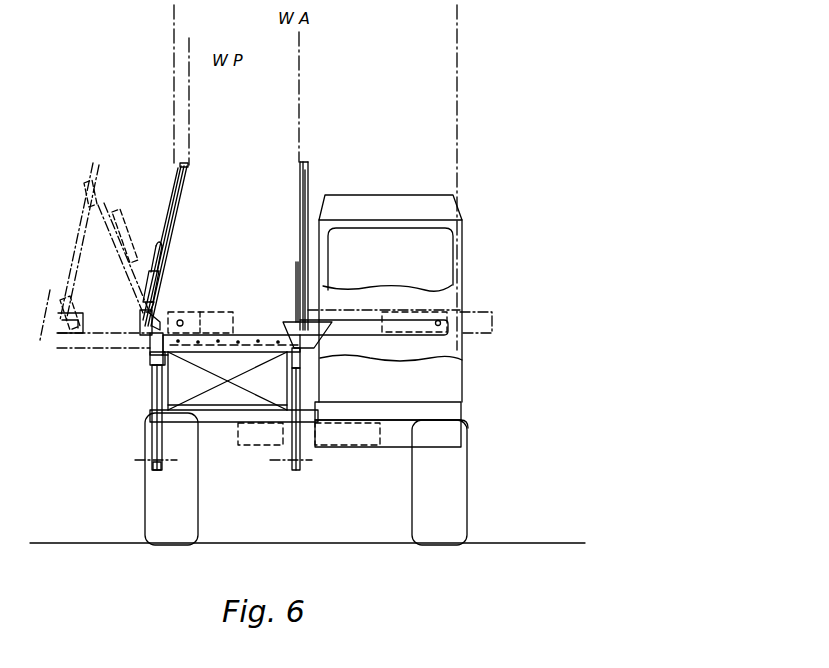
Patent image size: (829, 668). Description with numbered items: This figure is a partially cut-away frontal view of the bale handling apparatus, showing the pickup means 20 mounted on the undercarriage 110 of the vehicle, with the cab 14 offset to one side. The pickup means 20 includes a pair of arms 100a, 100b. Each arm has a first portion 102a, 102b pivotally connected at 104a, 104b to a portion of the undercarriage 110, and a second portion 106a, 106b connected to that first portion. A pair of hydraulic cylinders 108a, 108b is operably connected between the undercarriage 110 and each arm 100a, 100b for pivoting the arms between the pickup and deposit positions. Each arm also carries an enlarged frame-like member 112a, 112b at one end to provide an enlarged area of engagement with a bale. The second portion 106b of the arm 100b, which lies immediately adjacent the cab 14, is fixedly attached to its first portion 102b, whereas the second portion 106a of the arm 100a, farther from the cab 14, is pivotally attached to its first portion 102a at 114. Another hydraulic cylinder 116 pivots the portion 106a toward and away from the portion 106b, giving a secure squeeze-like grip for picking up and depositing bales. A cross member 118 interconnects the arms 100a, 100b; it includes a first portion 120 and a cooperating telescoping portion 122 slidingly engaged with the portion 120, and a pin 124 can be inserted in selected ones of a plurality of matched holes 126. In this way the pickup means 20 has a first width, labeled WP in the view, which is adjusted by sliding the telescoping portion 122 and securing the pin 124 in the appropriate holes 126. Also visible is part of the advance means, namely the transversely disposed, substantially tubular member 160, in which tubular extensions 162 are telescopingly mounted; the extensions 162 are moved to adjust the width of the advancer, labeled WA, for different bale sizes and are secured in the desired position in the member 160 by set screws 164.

The cab 14 is at (434, 195).
The pickup means 20 is at (325, 155).
The arm 100a is at (182, 162).
The arm 100b is at (304, 160).
The first portion 102a is at (152, 356).
The first portion 102b is at (296, 356).
The pivotal connection 104a is at (150, 410).
The pivotal connection 104b is at (304, 432).
The second portion 106a is at (165, 256).
The second portion 106b is at (296, 264).
The hydraulic cylinder 108a is at (154, 392).
The hydraulic cylinder 108b is at (272, 392).
The undercarriage 110 is at (220, 423).
The frame-like member 112a is at (178, 190).
The frame-like member 112b is at (308, 184).
The pivotal attachment 114 is at (152, 314).
The hydraulic cylinder 116 is at (162, 284).
The cross member 118 is at (274, 322).
The first portion 120 is at (240, 376).
The telescoping portion 122 is at (240, 314).
The pin 124 is at (158, 356).
The matched holes 126 is at (185, 342).
The transversely disposed member 160 is at (362, 336).
The tubular extensions 162 is at (122, 326).
The set screws 164 is at (441, 320).